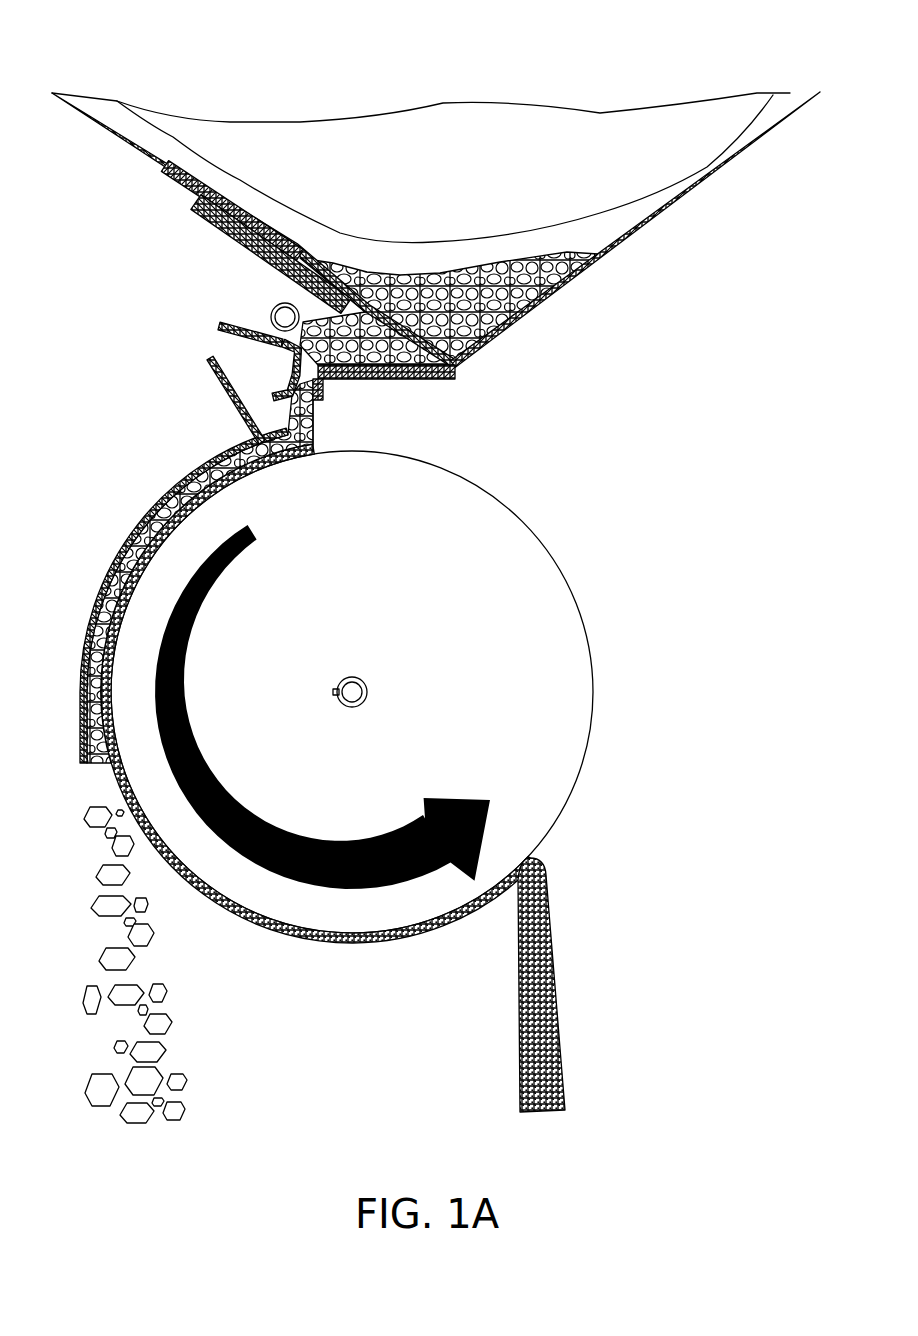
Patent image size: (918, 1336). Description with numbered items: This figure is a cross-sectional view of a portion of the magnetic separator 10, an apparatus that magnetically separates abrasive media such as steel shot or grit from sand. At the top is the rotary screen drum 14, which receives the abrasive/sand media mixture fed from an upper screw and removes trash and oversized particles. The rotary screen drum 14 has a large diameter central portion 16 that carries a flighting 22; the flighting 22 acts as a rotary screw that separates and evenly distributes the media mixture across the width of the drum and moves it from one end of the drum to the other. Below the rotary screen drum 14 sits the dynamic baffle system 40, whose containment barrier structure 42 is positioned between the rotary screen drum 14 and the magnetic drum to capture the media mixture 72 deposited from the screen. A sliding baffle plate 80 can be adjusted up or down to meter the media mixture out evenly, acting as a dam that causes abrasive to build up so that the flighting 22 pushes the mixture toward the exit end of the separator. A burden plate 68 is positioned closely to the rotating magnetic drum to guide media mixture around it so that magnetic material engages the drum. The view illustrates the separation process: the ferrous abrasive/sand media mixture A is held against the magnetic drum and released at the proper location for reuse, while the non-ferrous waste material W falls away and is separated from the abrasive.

The magnetic separator 10 is at (82, 224).
The rotary screen drum 14 is at (615, 232).
The central portion 16 is at (706, 168).
The flighting 22 is at (258, 153).
The dynamic baffle system 40 is at (208, 340).
The containment barrier structure 42 is at (580, 318).
The burden plate 68 is at (103, 592).
The media mixture 72 is at (500, 343).
The sliding baffle plate 80 is at (225, 238).
The abrasive/sand media mixture A is at (555, 995).
The waste material W is at (80, 1006).